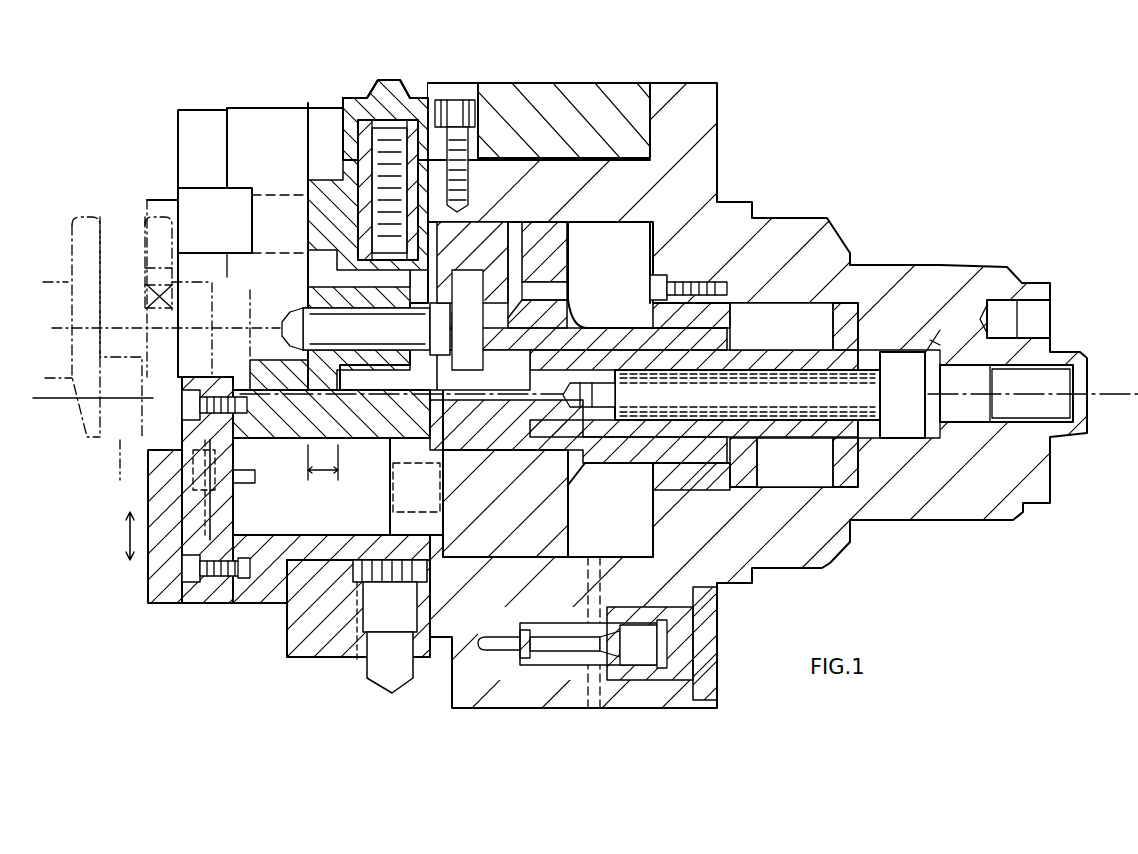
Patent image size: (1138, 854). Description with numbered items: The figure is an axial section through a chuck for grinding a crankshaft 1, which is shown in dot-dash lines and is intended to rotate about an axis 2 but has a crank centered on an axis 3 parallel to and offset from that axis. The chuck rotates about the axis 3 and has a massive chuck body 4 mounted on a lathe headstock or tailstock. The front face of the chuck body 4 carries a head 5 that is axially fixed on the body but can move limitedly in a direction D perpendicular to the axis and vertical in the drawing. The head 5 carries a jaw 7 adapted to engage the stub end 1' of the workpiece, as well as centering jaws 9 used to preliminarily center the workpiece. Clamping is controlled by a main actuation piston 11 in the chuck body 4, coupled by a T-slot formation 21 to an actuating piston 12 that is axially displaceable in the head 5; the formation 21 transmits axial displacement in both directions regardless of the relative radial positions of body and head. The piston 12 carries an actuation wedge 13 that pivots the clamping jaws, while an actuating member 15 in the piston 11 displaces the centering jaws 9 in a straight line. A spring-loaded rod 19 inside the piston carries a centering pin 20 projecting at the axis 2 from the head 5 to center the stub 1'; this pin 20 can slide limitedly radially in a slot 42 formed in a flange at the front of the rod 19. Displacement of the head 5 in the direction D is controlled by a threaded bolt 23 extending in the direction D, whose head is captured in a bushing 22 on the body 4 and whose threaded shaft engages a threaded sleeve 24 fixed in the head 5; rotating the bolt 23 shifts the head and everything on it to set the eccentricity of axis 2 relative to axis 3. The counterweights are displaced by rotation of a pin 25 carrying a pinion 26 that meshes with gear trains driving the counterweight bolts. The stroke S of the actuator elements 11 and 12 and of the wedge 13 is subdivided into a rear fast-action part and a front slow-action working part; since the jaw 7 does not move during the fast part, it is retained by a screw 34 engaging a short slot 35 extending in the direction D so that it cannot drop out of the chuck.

The crankshaft 1 is at (488, 399).
The stub end 1' is at (260, 305).
The axis 2 is at (110, 330).
The axis 3 is at (1112, 394).
The chuck body 4 is at (705, 137).
The head 5 is at (255, 108).
The jaw 7 is at (165, 580).
The centering jaws 9 is at (205, 223).
The main actuation piston 11 is at (583, 335).
The actuating piston 12 is at (357, 612).
The actuation wedge 13 is at (263, 483).
The actuating member 15 is at (478, 262).
The spring-loaded rod 19 is at (573, 468).
The centering pin 20 is at (320, 310).
The T-slot formation 21 is at (397, 490).
The bushing 22 is at (420, 110).
The threaded bolt 23 is at (352, 112).
The threaded sleeve 24 is at (365, 222).
The pin 25 is at (392, 682).
The pinion 26 is at (447, 567).
The screw 34 is at (192, 582).
The slot 35 is at (244, 585).
The slot 42 is at (440, 360).
The stroke S is at (322, 472).
The direction D is at (128, 538).